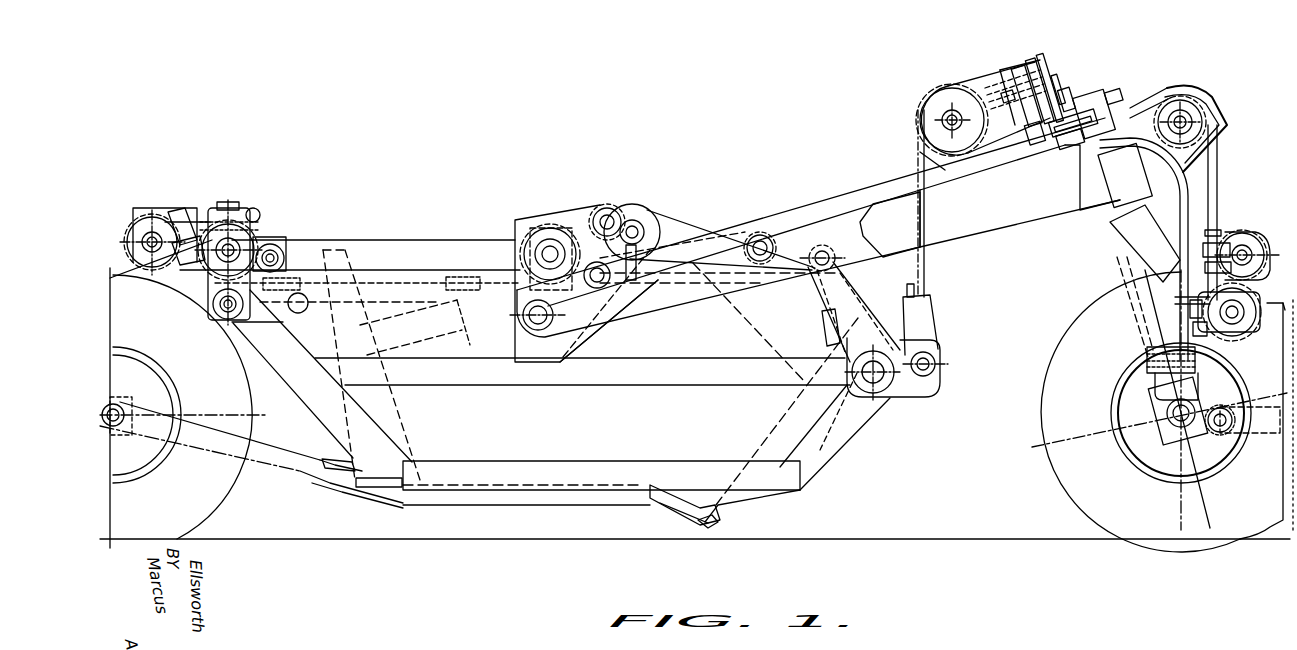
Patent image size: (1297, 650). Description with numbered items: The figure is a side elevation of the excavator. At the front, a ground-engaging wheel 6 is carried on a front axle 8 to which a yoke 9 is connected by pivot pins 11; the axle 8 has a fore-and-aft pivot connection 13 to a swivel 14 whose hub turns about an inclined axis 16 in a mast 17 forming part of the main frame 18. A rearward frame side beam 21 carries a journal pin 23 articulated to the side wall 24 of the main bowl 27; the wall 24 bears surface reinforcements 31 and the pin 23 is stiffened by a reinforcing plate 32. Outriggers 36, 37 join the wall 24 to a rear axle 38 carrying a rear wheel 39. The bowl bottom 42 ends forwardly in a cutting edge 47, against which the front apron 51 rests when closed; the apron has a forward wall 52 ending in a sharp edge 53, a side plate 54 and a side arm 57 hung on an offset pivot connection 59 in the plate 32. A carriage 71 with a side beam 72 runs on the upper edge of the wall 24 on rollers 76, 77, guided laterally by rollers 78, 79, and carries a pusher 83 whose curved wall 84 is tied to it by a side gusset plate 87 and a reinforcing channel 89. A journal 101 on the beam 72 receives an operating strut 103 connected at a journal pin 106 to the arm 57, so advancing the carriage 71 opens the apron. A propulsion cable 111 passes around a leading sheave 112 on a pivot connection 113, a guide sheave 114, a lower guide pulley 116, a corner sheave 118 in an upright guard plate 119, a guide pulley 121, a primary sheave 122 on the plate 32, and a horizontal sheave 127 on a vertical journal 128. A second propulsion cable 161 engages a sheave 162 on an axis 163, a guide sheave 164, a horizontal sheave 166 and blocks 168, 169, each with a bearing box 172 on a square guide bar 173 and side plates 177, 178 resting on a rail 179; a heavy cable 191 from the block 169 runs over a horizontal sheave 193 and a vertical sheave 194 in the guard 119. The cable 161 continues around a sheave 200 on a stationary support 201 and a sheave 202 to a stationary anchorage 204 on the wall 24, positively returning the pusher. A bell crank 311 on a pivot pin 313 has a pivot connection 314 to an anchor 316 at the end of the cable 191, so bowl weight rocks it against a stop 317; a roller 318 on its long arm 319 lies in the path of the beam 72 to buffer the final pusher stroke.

The front ground-engaging wheel 6 is at (1074, 496).
The front axle 8 is at (1165, 413).
The yoke 9 is at (1260, 432).
The pivot pins 11 is at (1215, 432).
The fore-and-aft pivot connection 13 is at (1150, 425).
The swivel 14 is at (1150, 385).
The inclined axis 16 is at (1155, 325).
The mast 17 is at (1120, 265).
The main frame 18 is at (1012, 232).
The frame side beam 21 is at (822, 205).
The journal pin 23 is at (522, 320).
The side wall 24 is at (684, 353).
The main bowl 27 is at (580, 508).
The surface reinforcement member 31 is at (313, 398).
The reinforcing plate 32 is at (572, 345).
The outrigger 36 is at (136, 280).
The outrigger 37 is at (287, 472).
The rear axle 38 is at (124, 410).
The rear ground-engaging wheel 39 is at (214, 505).
The bowl bottom 42 is at (508, 490).
The cutting edge 47 is at (690, 500).
The front apron 51 is at (862, 430).
The forward wall 52 is at (824, 457).
The sharp edge 53 is at (718, 522).
The side plate 54 is at (752, 428).
The side arm 57 is at (676, 226).
The offset pivot connection 59 is at (607, 208).
The carriage 71 is at (412, 240).
The carriage side beam 72 is at (365, 242).
The roller 76 is at (288, 245).
The roller 77 is at (530, 240).
The guide roller 78 is at (296, 278).
The guide roller 79 is at (470, 280).
The pusher 83 is at (347, 456).
The pusher wall 84 is at (366, 404).
The side gusset plate 87 is at (445, 405).
The reinforcing channel 89 is at (432, 336).
The journal 101 is at (604, 284).
The operating strut 103 is at (722, 238).
The journal pin 106 is at (764, 236).
The propulsion cable 111 is at (1143, 108).
The leading sheave 112 is at (1250, 234).
The pivot connection 113 is at (1216, 235).
The guide sheave 114 is at (1215, 120).
The lower guide pulley 116 is at (1124, 160).
The corner sheave 118 is at (1084, 150).
The upright guard plate 119 is at (995, 72).
The guide pulley 121 is at (645, 210).
The primary sheave 122 is at (548, 228).
The horizontal sheave 127 is at (256, 245).
The vertical journal 128 is at (228, 203).
The second propulsion cable 161 is at (1180, 180).
The sheave 162 is at (1268, 360).
The axis 163 is at (1196, 370).
The guide sheave 164 is at (1180, 95).
The horizontal sheave 166 is at (1110, 108).
The block 168 is at (1058, 75).
The block 169 is at (1063, 85).
The bearing box 172 is at (1045, 66).
The square guide bar 173 is at (1029, 65).
The side plate 177 is at (1030, 120).
The side plate 178 is at (1068, 110).
The rail 179 is at (1056, 142).
The heavy cable 191 is at (927, 275).
The horizontal sheave 193 is at (972, 82).
The vertical sheave 194 is at (920, 135).
The sheave 200 is at (152, 215).
The stationary support 201 is at (140, 222).
The sheave 202 is at (256, 208).
The stationary anchorage 204 is at (180, 215).
The bell crank 311 is at (922, 398).
The pivot pin 313 is at (885, 390).
The pivot connection 314 is at (937, 360).
The anchor 316 is at (933, 330).
The stop 317 is at (822, 322).
The roller 318 is at (826, 248).
The long arm 319 is at (858, 300).